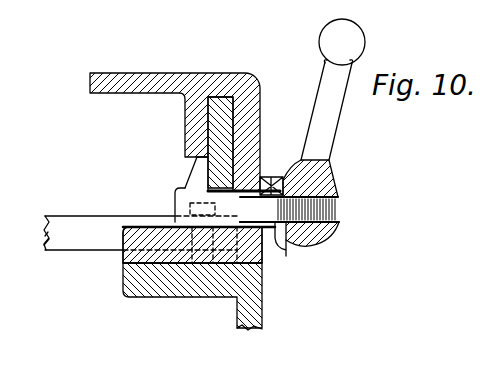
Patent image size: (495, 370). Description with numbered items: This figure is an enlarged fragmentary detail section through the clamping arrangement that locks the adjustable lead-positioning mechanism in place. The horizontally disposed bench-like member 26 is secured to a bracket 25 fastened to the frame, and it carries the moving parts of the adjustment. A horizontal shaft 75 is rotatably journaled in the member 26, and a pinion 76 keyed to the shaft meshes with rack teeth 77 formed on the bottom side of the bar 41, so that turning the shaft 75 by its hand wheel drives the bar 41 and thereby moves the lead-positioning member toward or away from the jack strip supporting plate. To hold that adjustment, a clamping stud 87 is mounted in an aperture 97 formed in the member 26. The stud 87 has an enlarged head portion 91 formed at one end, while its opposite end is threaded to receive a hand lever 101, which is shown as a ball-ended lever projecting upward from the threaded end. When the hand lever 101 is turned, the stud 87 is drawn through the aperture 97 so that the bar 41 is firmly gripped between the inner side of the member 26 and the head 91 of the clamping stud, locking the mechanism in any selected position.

The bench-like member 26 is at (250, 90).
The bar 41 is at (185, 132).
The rack teeth 77 is at (186, 186).
The enlarged head portion 91 is at (177, 190).
The horizontal shaft 75 is at (78, 228).
The aperture 97 is at (268, 175).
The hand lever 101 is at (323, 137).
The clamping stud 87 is at (286, 245).
The bracket 25 is at (263, 310).
The pinion 76 is at (237, 280).